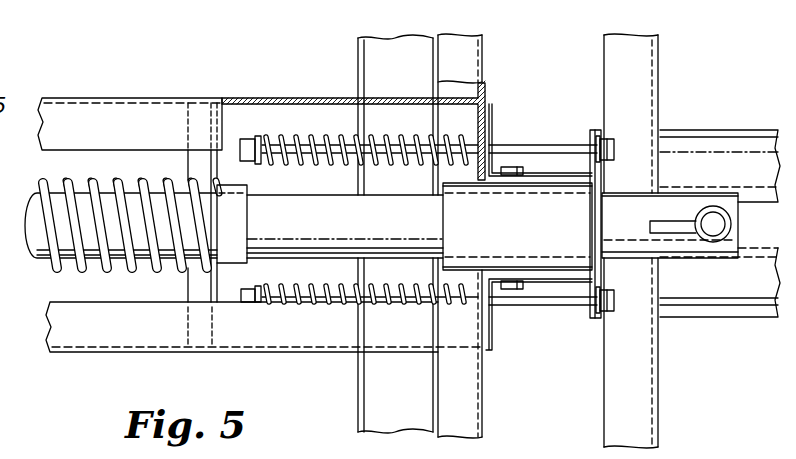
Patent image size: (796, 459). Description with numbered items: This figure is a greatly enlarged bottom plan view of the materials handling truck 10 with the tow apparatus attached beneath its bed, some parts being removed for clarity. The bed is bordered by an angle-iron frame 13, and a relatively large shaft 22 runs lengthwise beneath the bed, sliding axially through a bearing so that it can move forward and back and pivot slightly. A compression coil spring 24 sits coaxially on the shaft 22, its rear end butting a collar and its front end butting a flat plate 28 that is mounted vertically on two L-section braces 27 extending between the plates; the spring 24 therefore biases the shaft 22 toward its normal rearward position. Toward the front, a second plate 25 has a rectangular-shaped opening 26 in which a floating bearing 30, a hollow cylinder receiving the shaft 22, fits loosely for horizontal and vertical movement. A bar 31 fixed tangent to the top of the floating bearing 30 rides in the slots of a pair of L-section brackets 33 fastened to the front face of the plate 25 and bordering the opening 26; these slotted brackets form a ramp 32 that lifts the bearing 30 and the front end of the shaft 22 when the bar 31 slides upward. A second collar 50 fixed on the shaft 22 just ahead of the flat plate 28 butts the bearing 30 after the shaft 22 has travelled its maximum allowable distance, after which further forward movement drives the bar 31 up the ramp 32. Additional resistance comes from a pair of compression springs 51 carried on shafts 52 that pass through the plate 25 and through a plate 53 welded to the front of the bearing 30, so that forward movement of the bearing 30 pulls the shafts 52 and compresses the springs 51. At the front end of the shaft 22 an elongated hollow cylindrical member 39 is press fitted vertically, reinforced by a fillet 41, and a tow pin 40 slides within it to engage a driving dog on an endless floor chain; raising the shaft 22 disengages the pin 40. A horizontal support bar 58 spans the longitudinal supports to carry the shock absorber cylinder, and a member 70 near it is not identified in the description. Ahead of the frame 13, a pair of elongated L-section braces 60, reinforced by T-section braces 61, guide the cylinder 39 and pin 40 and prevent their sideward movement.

The materials handling truck 10 is at (80, 90).
The frame 13 is at (610, 52).
The shaft 22 is at (37, 257).
The compression coil spring 24 is at (60, 272).
The second plate 25 is at (483, 430).
The rectangular-shaped opening 26 is at (469, 268).
The braces 27 is at (118, 107).
The flat plate 28 is at (187, 288).
The floating bearing 30 is at (443, 224).
The bar 31 is at (518, 167).
The ramp 32 is at (495, 100).
The brackets 33 is at (492, 120).
The elongated hollow cylindrical member 39 is at (731, 222).
The tow pin 40 is at (712, 233).
The fillet 41 is at (653, 230).
The second collar 50 is at (242, 210).
The compression springs 51 is at (373, 287).
The shafts 52 is at (555, 148).
The plate 53 is at (592, 132).
The horizontal support bar 58 is at (353, 58).
The elongated braces 60 is at (748, 157).
The braces 61 is at (733, 133).
The base 70 is at (373, 450).